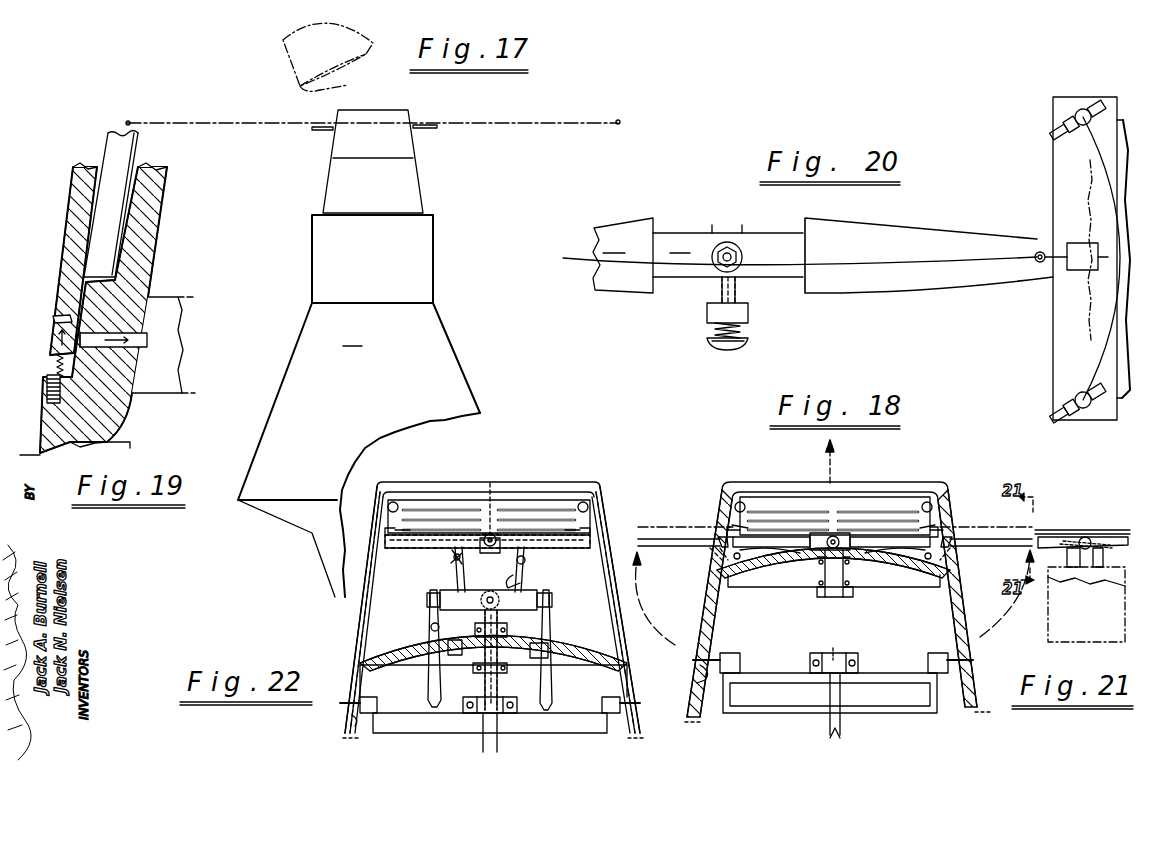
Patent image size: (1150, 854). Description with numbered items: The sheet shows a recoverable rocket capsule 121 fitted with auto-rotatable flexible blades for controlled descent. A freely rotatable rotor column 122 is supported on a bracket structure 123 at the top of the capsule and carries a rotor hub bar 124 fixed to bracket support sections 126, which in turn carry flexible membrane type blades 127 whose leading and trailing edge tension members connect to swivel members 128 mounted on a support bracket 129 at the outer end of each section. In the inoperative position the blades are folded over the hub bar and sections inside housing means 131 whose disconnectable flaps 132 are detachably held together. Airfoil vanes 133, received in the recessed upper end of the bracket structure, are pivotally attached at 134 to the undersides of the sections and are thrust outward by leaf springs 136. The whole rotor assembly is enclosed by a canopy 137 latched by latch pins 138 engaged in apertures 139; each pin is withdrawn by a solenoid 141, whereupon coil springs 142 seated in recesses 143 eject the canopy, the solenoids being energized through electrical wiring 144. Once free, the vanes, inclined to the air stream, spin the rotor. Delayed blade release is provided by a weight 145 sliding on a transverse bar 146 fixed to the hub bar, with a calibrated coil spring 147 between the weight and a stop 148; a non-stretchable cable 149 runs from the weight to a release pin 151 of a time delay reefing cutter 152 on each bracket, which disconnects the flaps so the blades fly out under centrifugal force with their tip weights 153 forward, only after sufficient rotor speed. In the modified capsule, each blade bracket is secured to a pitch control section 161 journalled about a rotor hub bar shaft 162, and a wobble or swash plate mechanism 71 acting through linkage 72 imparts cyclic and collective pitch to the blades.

In FIG. 22, the wobble or swash plate mechanism 71 is at (540, 592).
In FIG. 22, the linkage 72 is at (455, 570).
In FIG. 17, the recoverable rocket capsule 121 is at (359, 353).
In FIG. 18, the rotor column 122 is at (835, 598).
In FIG. 22, the rotor column 122 is at (490, 650).
In FIG. 18, the bracket structure 123 is at (763, 590).
In FIG. 22, the bracket structure 123 is at (493, 667).
In FIG. 20, the rotor hub bar 124 is at (728, 251).
In FIG. 18, the rotor hub bar 124 is at (850, 535).
In FIG. 20, the bracket support sections 126 is at (912, 242).
In FIG. 18, the bracket support sections 126 is at (773, 540).
In FIG. 22, the bracket support sections 126 is at (489, 520).
In FIG. 17, the flexible membrane type blades 127 is at (266, 126).
In FIG. 20, the flexible membrane type blades 127 is at (1110, 342).
In FIG. 18, the flexible membrane type blades 127 is at (770, 500).
In FIG. 22, the flexible membrane type blades 127 is at (570, 510).
In FIG. 20, the swivel members 128 is at (1075, 120).
In FIG. 20, the support bracket 129 is at (1060, 166).
In FIG. 18, the support bracket 129 is at (935, 538).
In FIG. 22, the support bracket 129 is at (585, 550).
In FIG. 21, the support bracket 129 is at (1090, 537).
In FIG. 18, the housing means 131 is at (812, 500).
In FIG. 22, the housing means 131 is at (552, 500).
In FIG. 18, the disconnectable flaps 132 is at (728, 508).
In FIG. 22, the disconnectable flaps 132 is at (596, 494).
In FIG. 19, the airfoil vanes 133 is at (108, 151).
In FIG. 18, the airfoil vanes 133 is at (710, 555).
In FIG. 21, the airfoil vanes 133 is at (1108, 580).
In FIG. 18, the pivotal attachment 134 is at (755, 580).
In FIG. 21, the pivotal attachment 134 is at (1060, 540).
In FIG. 18, the leaf springs 136 is at (765, 565).
In FIG. 21, the leaf springs 136 is at (1070, 565).
In FIG. 19, the canopy 137 is at (77, 240).
In FIG. 17, the canopy 137 is at (368, 118).
In FIG. 18, the canopy 137 is at (712, 600).
In FIG. 22, the canopy 137 is at (362, 630).
In FIG. 19, the latch pins 138 is at (125, 336).
In FIG. 18, the latch pins 138 is at (690, 660).
In FIG. 22, the latch pins 138 is at (342, 705).
In FIG. 19, the apertures 139 is at (53, 321).
In FIG. 19, the solenoid 141 is at (170, 359).
In FIG. 18, the solenoid 141 is at (740, 665).
In FIG. 22, the solenoid 141 is at (463, 703).
In FIG. 19, the coil spring 142 is at (57, 367).
In FIG. 18, the coil spring 142 is at (697, 680).
In FIG. 22, the coil spring 142 is at (352, 720).
In FIG. 19, the recesses 143 is at (47, 400).
In FIG. 18, the electrical wiring 144 is at (870, 713).
In FIG. 22, the electrical wiring 144 is at (527, 733).
In FIG. 20, the weight 145 is at (748, 316).
In FIG. 20, the bar 146 is at (722, 292).
In FIG. 20, the calibrated coil spring 147 is at (742, 333).
In FIG. 20, the stop 148 is at (726, 350).
In FIG. 22, the stop 148 is at (490, 500).
In FIG. 20, the non-stretchable cable 149 is at (568, 258).
In FIG. 20, the release pin 151 is at (1055, 257).
In FIG. 20, the time delay reefing cutter 152 is at (1078, 262).
In FIG. 18, the tip weights 153 is at (745, 504).
In FIG. 22, the tip weights 153 is at (398, 505).
In FIG. 22, the pitch control section 161 is at (412, 545).
In FIG. 22, the rotor hub bar shaft 162 is at (455, 556).